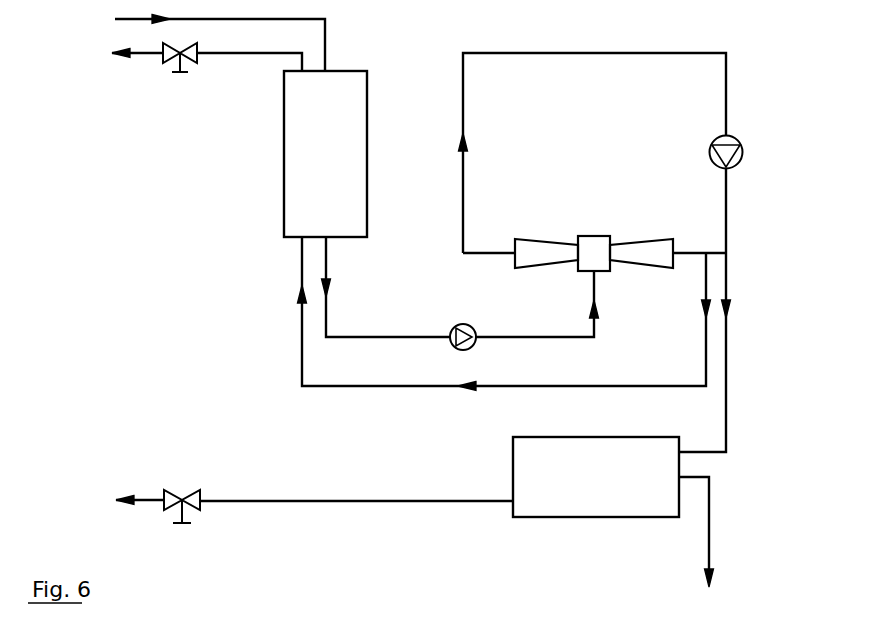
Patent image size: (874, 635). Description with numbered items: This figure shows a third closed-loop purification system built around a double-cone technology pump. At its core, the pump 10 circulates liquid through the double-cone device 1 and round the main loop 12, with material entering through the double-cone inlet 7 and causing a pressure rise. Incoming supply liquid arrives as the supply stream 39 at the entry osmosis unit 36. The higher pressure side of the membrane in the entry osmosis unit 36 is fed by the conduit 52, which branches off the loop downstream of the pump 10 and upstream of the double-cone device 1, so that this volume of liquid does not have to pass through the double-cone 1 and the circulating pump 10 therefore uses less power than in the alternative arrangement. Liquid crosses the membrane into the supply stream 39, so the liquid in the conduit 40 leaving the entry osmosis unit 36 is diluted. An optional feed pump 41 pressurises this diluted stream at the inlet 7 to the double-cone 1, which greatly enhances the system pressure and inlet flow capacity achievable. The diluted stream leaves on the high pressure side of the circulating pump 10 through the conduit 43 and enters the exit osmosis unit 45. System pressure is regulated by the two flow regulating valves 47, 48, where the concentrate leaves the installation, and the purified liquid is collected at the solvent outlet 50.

The double-cone device 1 is at (643, 241).
The double-cone inlet 7 is at (600, 271).
The pump 10 is at (742, 150).
The main loop 12 is at (726, 122).
The entry osmosis unit 36 is at (284, 153).
The supply stream 39 is at (268, 19).
The conduit 40 is at (326, 312).
The feed pump 41 is at (452, 345).
The conduit 43 is at (728, 382).
The exit osmosis unit 45 is at (679, 445).
The flow regulating valve 47 is at (186, 497).
The flow regulating valve 48 is at (180, 53).
The solvent outlet 50 is at (709, 514).
The conduit 52 is at (300, 273).